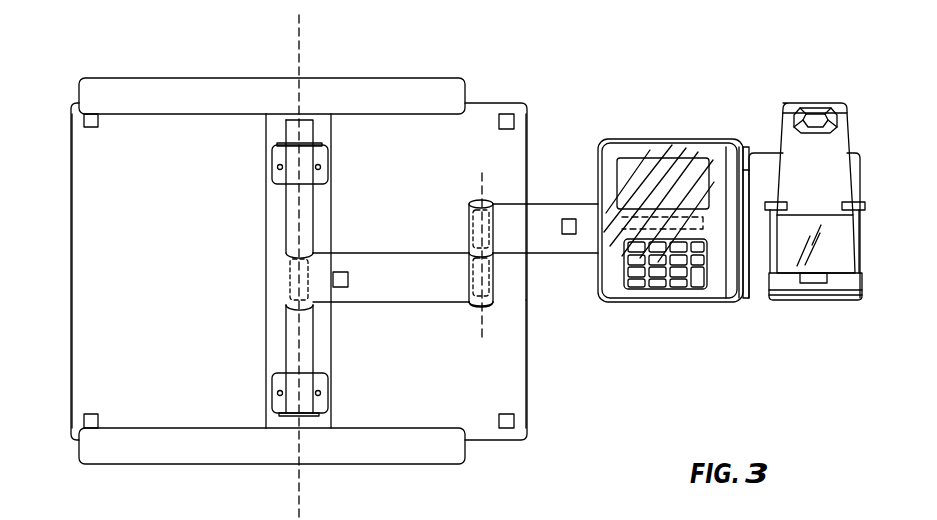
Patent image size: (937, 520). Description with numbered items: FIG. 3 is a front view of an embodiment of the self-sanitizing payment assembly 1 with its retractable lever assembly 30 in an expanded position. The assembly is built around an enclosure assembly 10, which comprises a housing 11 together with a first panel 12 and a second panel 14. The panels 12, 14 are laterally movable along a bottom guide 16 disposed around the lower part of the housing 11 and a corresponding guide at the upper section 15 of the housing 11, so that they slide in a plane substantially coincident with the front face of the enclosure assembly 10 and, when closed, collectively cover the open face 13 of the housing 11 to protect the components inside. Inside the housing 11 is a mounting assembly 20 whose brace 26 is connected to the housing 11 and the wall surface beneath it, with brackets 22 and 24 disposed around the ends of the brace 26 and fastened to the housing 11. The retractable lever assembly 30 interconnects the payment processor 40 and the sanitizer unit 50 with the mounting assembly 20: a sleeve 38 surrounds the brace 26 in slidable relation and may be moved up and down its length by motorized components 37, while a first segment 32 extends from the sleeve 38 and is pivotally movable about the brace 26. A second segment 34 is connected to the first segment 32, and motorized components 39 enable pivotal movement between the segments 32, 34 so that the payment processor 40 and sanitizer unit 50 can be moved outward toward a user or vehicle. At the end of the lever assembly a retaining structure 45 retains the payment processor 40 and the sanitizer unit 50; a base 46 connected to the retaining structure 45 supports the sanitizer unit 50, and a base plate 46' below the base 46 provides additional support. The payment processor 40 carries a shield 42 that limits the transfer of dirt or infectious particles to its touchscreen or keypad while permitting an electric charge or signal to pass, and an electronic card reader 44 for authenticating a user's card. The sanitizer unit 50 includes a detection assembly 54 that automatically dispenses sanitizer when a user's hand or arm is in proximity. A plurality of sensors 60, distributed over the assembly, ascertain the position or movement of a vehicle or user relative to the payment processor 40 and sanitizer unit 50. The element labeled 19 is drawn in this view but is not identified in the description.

The self-sanitizing payment assembly 1 is at (62, 58).
The enclosure assembly 10 is at (527, 127).
The housing 11 is at (528, 350).
The first panel 12 is at (86, 360).
The open face of the housing 13 is at (322, 345).
The second panel 14 is at (508, 390).
The upper section of the housing 15 is at (205, 85).
The bottom guide 16 is at (205, 450).
The first guide rail 19 is at (322, 201).
The mounting assembly 20 is at (270, 350).
The bracket 22 is at (320, 150).
The bracket 24 is at (320, 405).
The brace 26 is at (300, 358).
The retractable lever assembly 30 is at (470, 180).
The first segment 32 is at (402, 265).
The second segment 34 is at (511, 225).
The motorized components 37 is at (293, 280).
The sleeve 38 is at (297, 306).
The motorized components 39 is at (487, 298).
The payment processor 40 is at (741, 300).
The shield 42 is at (638, 139).
The electronic card reader 44 is at (683, 215).
The retaining structure 45 is at (760, 160).
The base 46 is at (847, 271).
The base plate 46' is at (839, 317).
The sanitizer unit 50 is at (848, 240).
The detection assembly 54 is at (820, 140).
The sensors 60 is at (91, 127).